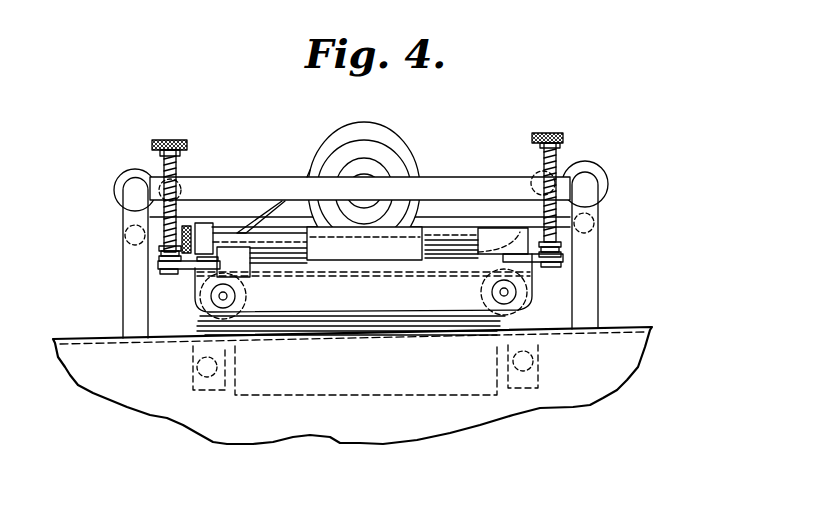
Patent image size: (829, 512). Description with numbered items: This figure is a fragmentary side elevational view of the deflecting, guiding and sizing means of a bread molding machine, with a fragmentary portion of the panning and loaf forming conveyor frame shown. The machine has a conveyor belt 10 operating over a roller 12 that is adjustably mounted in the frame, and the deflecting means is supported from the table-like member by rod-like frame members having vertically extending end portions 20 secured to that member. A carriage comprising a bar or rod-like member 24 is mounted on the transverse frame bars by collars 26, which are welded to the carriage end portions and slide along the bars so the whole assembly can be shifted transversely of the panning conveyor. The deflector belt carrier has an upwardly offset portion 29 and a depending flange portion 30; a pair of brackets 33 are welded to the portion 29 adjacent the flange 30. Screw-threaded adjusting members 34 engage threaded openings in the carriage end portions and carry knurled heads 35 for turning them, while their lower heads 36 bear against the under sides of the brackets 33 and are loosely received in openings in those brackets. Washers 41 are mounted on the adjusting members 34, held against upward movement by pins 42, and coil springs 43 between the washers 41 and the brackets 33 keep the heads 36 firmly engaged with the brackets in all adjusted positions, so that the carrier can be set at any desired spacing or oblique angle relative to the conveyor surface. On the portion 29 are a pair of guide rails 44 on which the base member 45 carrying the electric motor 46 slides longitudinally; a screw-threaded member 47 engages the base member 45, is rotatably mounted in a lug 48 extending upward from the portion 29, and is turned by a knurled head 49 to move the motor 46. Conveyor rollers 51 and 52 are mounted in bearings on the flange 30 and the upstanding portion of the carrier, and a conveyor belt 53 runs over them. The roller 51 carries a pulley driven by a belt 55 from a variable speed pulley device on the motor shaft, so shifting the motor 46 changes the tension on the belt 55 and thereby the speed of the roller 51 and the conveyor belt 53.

The conveyor belt 10 is at (315, 398).
The roller 12 is at (360, 382).
The vertically extending end portion 20 is at (133, 303).
The bar or rod-like member 24 is at (440, 185).
The collar 26 is at (127, 180).
The portion 29 is at (240, 257).
The depending flange portion 30 is at (390, 300).
The bracket 33 is at (183, 265).
The screw-threaded adjusting member 34 is at (177, 167).
The knurled head 35 is at (178, 140).
The head 36 is at (158, 273).
The washer 41 is at (158, 251).
The pin 42 is at (160, 247).
The coil spring 43 is at (157, 260).
The guide rail 44 is at (463, 250).
The base member 45 is at (452, 235).
The electric motor 46 is at (397, 143).
The screw-threaded member 47 is at (240, 231).
The lug 48 is at (206, 223).
The knurled head 49 is at (185, 226).
The conveyor roller 51 is at (217, 327).
The conveyor roller 52 is at (540, 327).
The conveyor belt 53 is at (337, 325).
The belt 55 is at (309, 175).